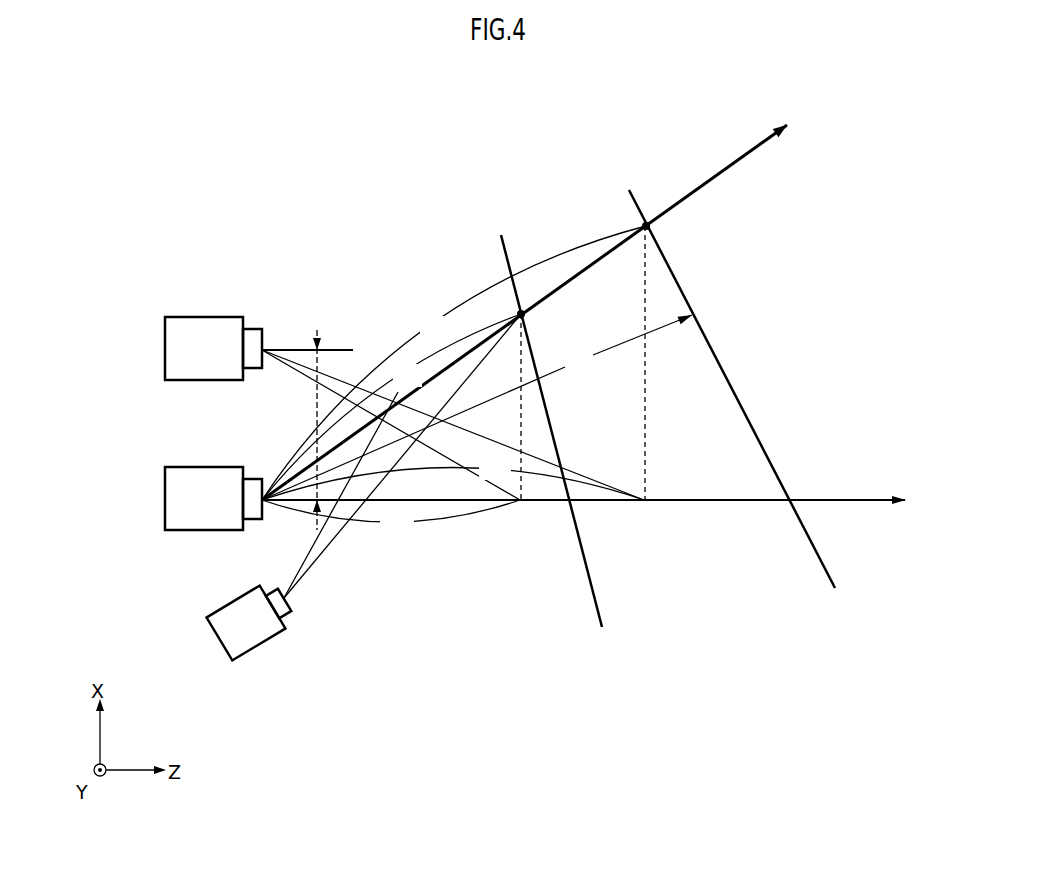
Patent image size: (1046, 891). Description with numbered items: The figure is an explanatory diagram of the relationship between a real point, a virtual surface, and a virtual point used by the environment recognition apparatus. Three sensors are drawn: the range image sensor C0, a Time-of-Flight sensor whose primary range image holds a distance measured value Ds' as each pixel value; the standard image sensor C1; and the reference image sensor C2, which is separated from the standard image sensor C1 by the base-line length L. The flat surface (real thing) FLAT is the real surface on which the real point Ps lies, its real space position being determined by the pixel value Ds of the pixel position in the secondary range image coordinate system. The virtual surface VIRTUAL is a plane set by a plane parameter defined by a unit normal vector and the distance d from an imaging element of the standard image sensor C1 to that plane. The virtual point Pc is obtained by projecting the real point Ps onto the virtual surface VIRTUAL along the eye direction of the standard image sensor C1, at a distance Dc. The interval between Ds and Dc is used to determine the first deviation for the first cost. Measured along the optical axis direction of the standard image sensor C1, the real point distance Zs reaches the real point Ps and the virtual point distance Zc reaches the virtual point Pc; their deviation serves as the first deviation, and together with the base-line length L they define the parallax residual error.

The range image sensor C0 is at (252, 619).
The standard image sensor C1 is at (219, 513).
The reference image sensor C2 is at (219, 363).
The real point Ps is at (524, 316).
The virtual point Pc is at (649, 228).
The distance to the virtual point Dc is at (454, 363).
The pixel value (distance to the real point) Ds is at (391, 407).
The distance measured value Ds' is at (305, 562).
The virtual point distance Zc is at (453, 477).
The real point distance Zs is at (391, 518).
The base-line length L is at (328, 424).
The distance to the virtual surface d is at (477, 407).
The flat surface (real thing) FLAT is at (595, 467).
The virtual surface VIRTUAL is at (782, 403).